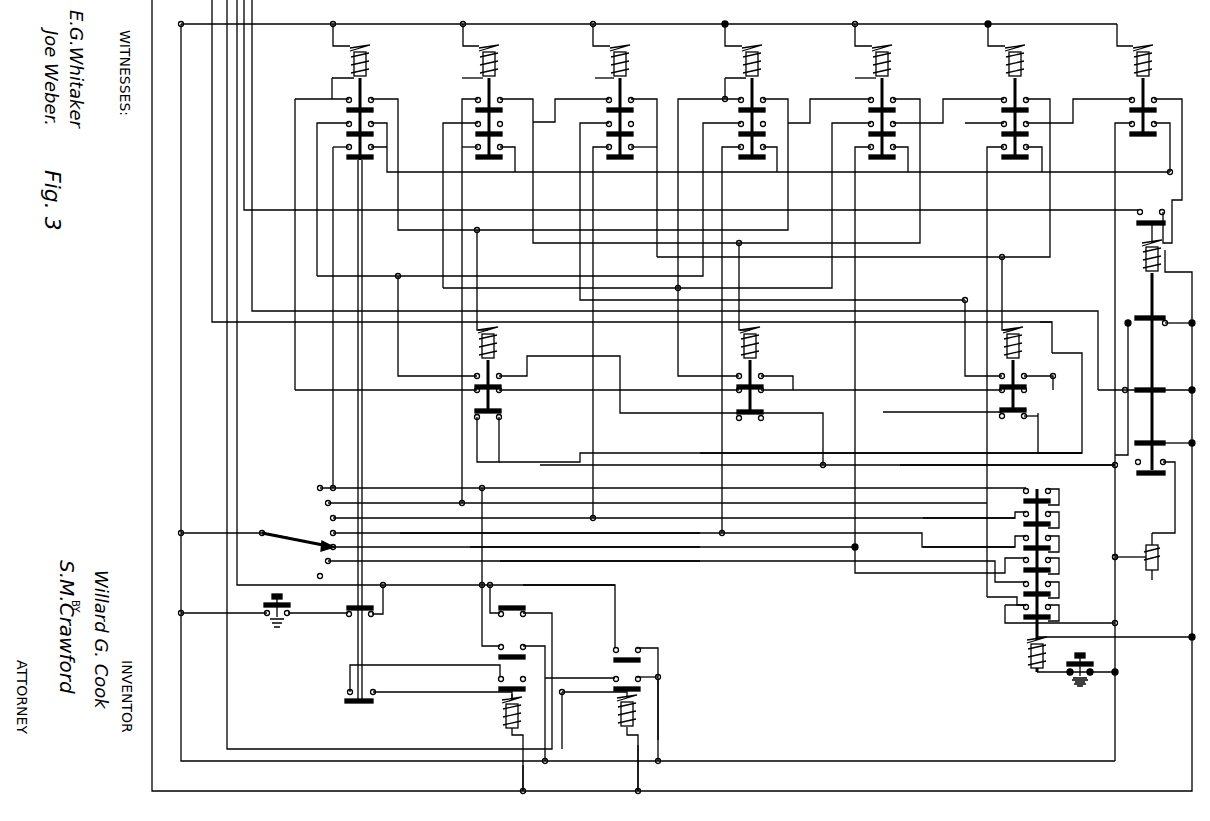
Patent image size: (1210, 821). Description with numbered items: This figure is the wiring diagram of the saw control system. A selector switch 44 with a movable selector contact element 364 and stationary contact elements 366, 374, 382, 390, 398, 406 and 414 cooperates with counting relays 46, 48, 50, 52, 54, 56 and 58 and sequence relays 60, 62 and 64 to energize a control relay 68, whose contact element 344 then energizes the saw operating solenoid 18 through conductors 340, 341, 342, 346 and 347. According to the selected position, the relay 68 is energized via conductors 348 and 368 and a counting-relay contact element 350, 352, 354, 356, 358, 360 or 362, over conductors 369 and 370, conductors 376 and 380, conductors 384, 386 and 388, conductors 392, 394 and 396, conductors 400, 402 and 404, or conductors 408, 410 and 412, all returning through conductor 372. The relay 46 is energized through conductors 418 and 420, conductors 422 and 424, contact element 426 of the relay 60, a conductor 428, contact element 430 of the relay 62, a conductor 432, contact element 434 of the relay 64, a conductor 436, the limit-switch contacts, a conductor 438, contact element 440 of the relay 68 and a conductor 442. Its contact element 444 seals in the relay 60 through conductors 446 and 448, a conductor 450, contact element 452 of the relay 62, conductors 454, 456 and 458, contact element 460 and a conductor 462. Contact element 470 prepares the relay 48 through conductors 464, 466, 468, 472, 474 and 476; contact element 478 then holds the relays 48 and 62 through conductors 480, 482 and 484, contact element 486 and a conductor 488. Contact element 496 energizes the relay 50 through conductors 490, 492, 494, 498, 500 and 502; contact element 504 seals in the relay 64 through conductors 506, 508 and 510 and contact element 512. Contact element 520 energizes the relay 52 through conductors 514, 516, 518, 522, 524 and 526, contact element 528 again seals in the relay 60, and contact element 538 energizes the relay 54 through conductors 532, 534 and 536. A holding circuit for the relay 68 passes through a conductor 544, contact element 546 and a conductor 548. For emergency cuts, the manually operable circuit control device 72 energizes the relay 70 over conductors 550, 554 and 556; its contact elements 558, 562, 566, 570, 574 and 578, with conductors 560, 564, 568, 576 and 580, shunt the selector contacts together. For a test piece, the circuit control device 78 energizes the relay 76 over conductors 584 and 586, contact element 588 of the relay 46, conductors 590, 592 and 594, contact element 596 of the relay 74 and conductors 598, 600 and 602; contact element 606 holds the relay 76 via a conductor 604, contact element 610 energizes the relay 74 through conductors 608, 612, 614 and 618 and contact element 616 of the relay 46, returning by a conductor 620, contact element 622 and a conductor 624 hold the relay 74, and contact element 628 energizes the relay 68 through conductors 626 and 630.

The saw operating solenoid 18 is at (1163, 562).
The selector switch 44 is at (272, 518).
The counting relay 46 is at (340, 73).
The counting relay 48 is at (470, 73).
The counting relay 50 is at (602, 73).
The counting relay 52 is at (730, 73).
The counting relay 54 is at (862, 73).
The counting relay 56 is at (992, 73).
The counting relay 58 is at (1118, 73).
The sequence relay 60 is at (515, 370).
The sequence relay 62 is at (775, 370).
The sequence relay 64 is at (1006, 368).
The control relay 68 is at (1160, 264).
The relay 70 is at (1017, 671).
The circuit control device 72 is at (1086, 650).
The relay 74 is at (498, 733).
The relay 76 is at (616, 723).
The circuit control device 78 is at (286, 601).
The conductor 340 is at (1128, 730).
The conductor 341 is at (1125, 565).
The conductor 342 is at (1158, 508).
The contact element 344 is at (1151, 497).
The conductor 346 is at (1165, 433).
The conductor 347 is at (1170, 682).
The conductor 348 is at (1168, 186).
The contact element 350 is at (353, 157).
The contact element 352 is at (484, 162).
The contact element 354 is at (614, 162).
The contact element 356 is at (748, 162).
The contact element 358 is at (884, 162).
The contact element 360 is at (1008, 371).
The contact element 362 is at (1134, 442).
The movable selector contact element 364 is at (269, 544).
The contact element 366 is at (316, 488).
The conductor 368 is at (202, 532).
The conductor 369 is at (366, 490).
The conductor 370 is at (333, 445).
The conductor 372 is at (1005, 566).
The contact element 374 is at (324, 503).
The conductor 376 is at (376, 505).
The conductor 380 is at (496, 150).
The contact element 382 is at (330, 518).
The conductor 384 is at (391, 525).
The conductor 386 is at (590, 437).
The conductor 388 is at (657, 150).
The contact element 390 is at (330, 532).
The conductor 392 is at (422, 538).
The conductor 394 is at (724, 438).
The conductor 396 is at (782, 150).
The contact element 398 is at (330, 547).
The conductor 400 is at (488, 548).
The conductor 402 is at (965, 572).
The conductor 404 is at (910, 152).
The contact element 406 is at (325, 561).
The conductor 408 is at (556, 560).
The conductor 410 is at (978, 585).
The conductor 412 is at (1046, 152).
The contact element 414 is at (317, 576).
The conductor 418 is at (292, 28).
The conductor 420 is at (340, 38).
The conductor 422 is at (321, 86).
The conductor 424 is at (305, 236).
The contact element 426 is at (472, 386).
The conductor 428 is at (619, 381).
The contact element 430 is at (734, 386).
The conductor 432 is at (822, 388).
The contact element 434 is at (980, 380).
The conductor 436 is at (618, 176).
The conductor 438 is at (1092, 310).
The contact element 440 is at (1158, 385).
The conductor 442 is at (1169, 402).
The contact element 444 is at (370, 92).
The conductor 446 is at (790, 158).
The conductor 448 is at (480, 268).
The conductor 450 is at (540, 352).
The contact element 452 is at (765, 413).
The conductor 454 is at (812, 416).
The conductor 456 is at (1184, 100).
The conductor 458 is at (1132, 368).
The contact element 460 is at (1161, 300).
The conductor 462 is at (1179, 311).
The conductor 464 is at (480, 35).
The conductor 466 is at (452, 75).
The conductor 468 is at (452, 291).
The contact element 470 is at (345, 133).
The conductor 472 is at (340, 122).
The conductor 474 is at (398, 352).
The conductor 476 is at (619, 384).
The contact element 478 is at (500, 96).
The conductor 480 is at (710, 165).
The conductor 482 is at (742, 268).
The conductor 484 is at (802, 352).
The contact element 486 is at (1030, 410).
The conductor 488 is at (1038, 445).
The conductor 490 is at (611, 35).
The conductor 492 is at (584, 75).
The conductor 494 is at (571, 101).
The contact element 496 is at (476, 134).
The conductor 498 is at (458, 197).
The conductor 500 is at (676, 338).
The conductor 502 is at (789, 376).
The contact element 504 is at (630, 96).
The conductor 506 is at (645, 171).
The conductor 508 is at (1004, 280).
The conductor 510 is at (1082, 352).
The contact element 512 is at (503, 412).
The conductor 514 is at (743, 35).
The conductor 516 is at (714, 85).
The conductor 518 is at (709, 184).
The contact element 520 is at (606, 130).
The conductor 522 is at (580, 137).
The conductor 524 is at (962, 350).
The conductor 526 is at (1034, 376).
The contact element 528 is at (762, 96).
The conductor 532 is at (875, 35).
The conductor 534 is at (844, 75).
The conductor 536 is at (829, 104).
The contact element 538 is at (745, 130).
The conductor 544 is at (1104, 212).
The contact element 546 is at (1136, 226).
The conductor 548 is at (1149, 205).
The conductor 550 is at (1092, 690).
The conductor 554 is at (1064, 673).
The conductor 556 is at (1090, 637).
The contact element 558 is at (1032, 490).
The conductor 560 is at (1060, 492).
The contact element 562 is at (1055, 520).
The conductor 564 is at (1012, 524).
The contact element 566 is at (1012, 544).
The conductor 568 is at (1055, 545).
The contact element 570 is at (1055, 566).
The contact element 574 is at (1006, 591).
The conductor 576 is at (1055, 588).
The contact element 578 is at (1055, 612).
The conductor 580 is at (1003, 612).
The conductor 584 is at (208, 610).
The conductor 586 is at (326, 614).
The contact element 588 is at (374, 616).
The conductor 590 is at (386, 605).
The conductor 592 is at (462, 585).
The conductor 594 is at (502, 596).
The contact element 596 is at (574, 588).
The conductor 598 is at (562, 622).
The conductor 600 is at (594, 718).
The conductor 602 is at (634, 742).
The conductor 604 is at (662, 704).
The contact element 606 is at (628, 650).
The conductor 608 is at (660, 668).
The contact element 610 is at (645, 685).
The conductor 612 is at (568, 676).
The conductor 614 is at (428, 664).
The contact element 616 is at (374, 702).
The conductor 618 is at (430, 692).
The conductor 620 is at (520, 772).
The contact element 622 is at (504, 700).
The conductor 624 is at (497, 683).
The conductor 626 is at (540, 636).
The contact element 628 is at (496, 656).
The conductor 630 is at (480, 621).